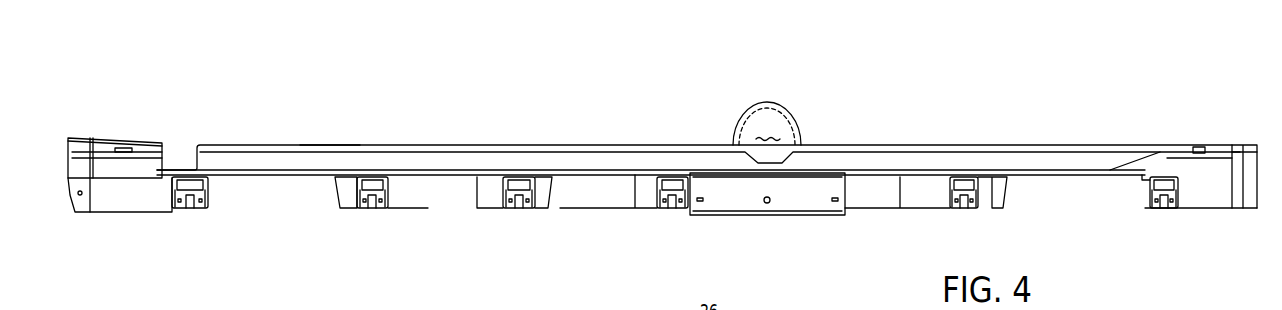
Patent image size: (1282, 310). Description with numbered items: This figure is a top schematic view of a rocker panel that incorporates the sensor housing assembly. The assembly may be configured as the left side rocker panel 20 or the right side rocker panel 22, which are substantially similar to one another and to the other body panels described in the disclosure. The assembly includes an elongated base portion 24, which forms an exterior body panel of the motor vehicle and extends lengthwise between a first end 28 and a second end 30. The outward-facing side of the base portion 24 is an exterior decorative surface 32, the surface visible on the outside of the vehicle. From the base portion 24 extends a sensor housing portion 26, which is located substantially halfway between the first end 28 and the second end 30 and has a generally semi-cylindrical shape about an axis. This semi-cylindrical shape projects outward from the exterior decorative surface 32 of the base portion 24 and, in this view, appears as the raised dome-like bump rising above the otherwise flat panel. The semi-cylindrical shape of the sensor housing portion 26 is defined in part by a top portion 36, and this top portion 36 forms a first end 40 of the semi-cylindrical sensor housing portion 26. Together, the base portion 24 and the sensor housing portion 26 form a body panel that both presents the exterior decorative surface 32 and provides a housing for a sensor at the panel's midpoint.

The left side rocker panel 20 is at (534, 66).
The right side rocker panel 22 is at (534, 66).
The base portion 24 is at (242, 160).
The sensor housing portion 26 is at (813, 105).
The first end 28 is at (67, 137).
The second end 30 is at (1257, 143).
The exterior decorative surface 32 is at (322, 145).
The top portion 36 is at (801, 130).
The first end 40 is at (768, 127).